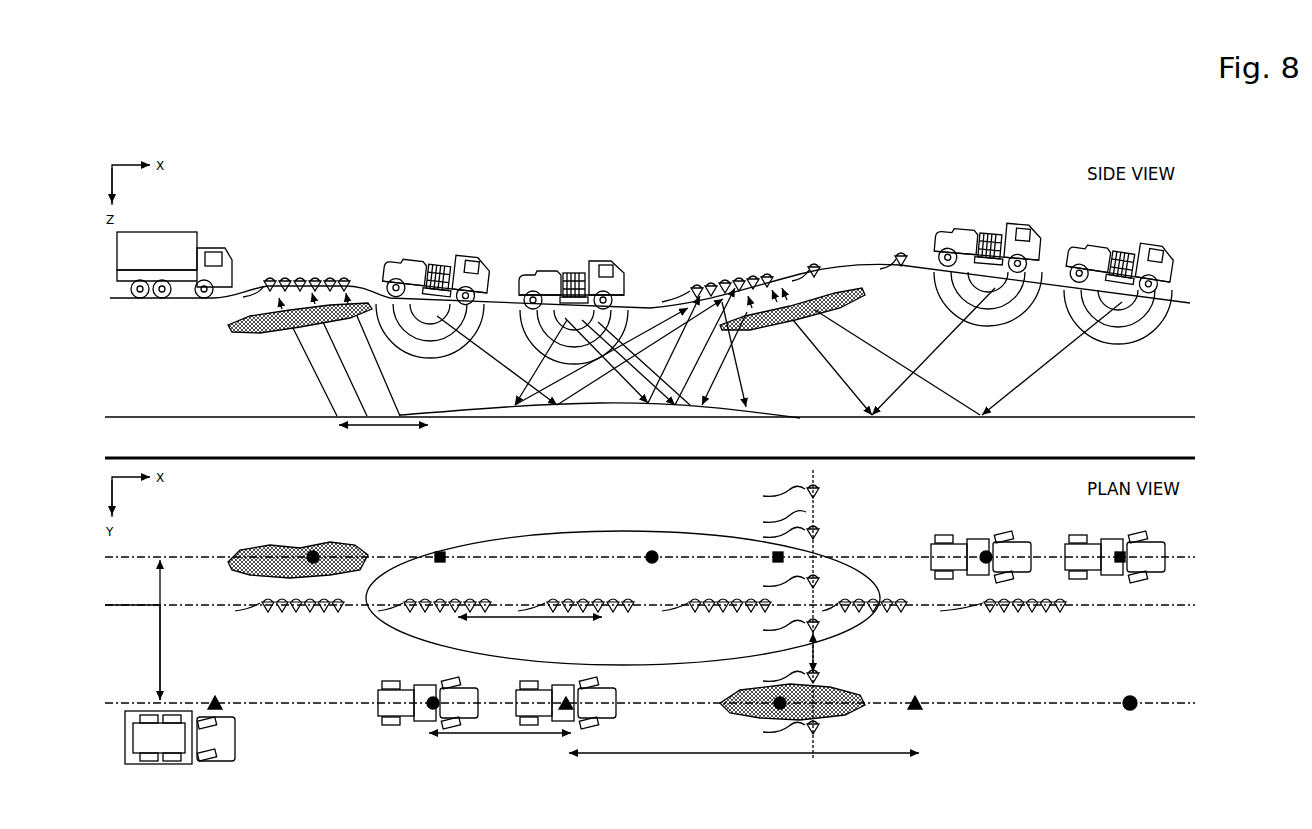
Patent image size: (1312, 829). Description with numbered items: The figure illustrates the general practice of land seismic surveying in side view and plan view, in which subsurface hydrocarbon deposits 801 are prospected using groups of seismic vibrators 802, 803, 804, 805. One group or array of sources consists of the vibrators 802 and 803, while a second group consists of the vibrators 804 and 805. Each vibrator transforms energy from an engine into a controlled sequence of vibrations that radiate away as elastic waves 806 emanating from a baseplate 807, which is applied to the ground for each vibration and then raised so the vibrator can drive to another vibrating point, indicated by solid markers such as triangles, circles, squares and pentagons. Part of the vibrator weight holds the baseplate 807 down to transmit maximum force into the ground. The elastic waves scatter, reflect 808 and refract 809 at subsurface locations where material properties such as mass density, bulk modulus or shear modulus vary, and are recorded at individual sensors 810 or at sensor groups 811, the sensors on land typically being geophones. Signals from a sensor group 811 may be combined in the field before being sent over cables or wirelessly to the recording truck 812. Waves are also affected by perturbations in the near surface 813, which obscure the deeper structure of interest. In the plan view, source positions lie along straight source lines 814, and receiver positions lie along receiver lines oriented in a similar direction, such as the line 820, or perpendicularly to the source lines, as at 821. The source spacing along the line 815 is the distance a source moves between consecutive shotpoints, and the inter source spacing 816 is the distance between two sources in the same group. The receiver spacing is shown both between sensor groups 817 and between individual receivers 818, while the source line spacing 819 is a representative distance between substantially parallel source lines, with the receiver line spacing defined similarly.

The subsurface hydrocarbon deposits 801 is at (648, 664).
The seismic vibrator 802 is at (600, 262).
The seismic vibrator 803 is at (470, 262).
The seismic vibrator 804 is at (1160, 252).
The seismic vibrator 805 is at (1022, 232).
The elastic waves 806 is at (430, 350).
The baseplate 807 is at (433, 298).
The reflection 808 is at (620, 375).
The refraction 809 is at (308, 362).
The individual sensor 810 is at (813, 266).
The sensor group 811 is at (300, 279).
The recording truck 812 is at (175, 233).
The near surface perturbations 813 is at (230, 324).
The source line 814 is at (158, 560).
The source spacing along the line 815 is at (680, 752).
The inter source spacing 816 is at (455, 735).
The receiver spacing between sensor groups 817 is at (482, 618).
The receiver spacing between individual receivers 818 is at (820, 657).
The source line spacing 819 is at (162, 650).
The receiver line 820 is at (138, 605).
The perpendicular receiver line 821 is at (805, 510).